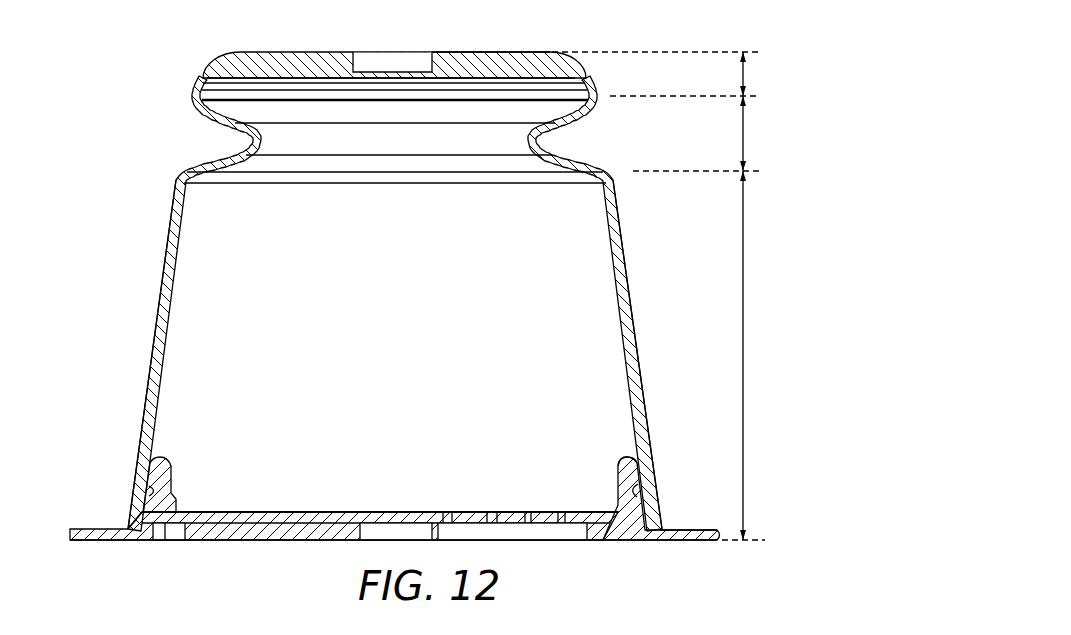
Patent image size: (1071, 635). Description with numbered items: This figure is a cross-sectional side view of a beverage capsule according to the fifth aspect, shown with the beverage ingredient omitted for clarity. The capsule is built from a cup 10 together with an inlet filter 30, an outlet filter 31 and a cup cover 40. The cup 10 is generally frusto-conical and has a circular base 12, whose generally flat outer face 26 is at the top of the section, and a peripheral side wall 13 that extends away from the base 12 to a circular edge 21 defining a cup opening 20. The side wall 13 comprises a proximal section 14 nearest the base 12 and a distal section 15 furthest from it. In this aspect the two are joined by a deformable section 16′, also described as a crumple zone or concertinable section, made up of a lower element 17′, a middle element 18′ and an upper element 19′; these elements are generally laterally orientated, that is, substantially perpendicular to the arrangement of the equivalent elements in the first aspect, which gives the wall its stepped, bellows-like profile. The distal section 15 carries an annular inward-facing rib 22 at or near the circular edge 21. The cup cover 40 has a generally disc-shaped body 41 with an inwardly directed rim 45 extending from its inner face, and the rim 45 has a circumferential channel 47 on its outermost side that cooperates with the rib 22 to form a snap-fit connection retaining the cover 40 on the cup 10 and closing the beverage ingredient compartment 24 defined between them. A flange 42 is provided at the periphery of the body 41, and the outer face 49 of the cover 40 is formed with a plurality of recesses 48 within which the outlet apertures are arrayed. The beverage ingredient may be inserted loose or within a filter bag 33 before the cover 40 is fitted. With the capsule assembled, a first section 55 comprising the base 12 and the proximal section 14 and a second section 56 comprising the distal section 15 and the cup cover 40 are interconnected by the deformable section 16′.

The cup 10 is at (133, 269).
The base 12 is at (525, 52).
The peripheral side wall 13 is at (138, 219).
The proximal section 14 is at (229, 60).
The distal section 15 is at (152, 347).
The deformable section 16′ is at (706, 133).
The lower element 17′ is at (200, 80).
The middle element 18′ is at (210, 112).
The upper element 19′ is at (223, 160).
The cup opening 20 is at (320, 485).
The circular edge 21 is at (136, 512).
The annular inward-facing rib 22 is at (158, 491).
The beverage ingredient compartment 24 is at (595, 312).
The outer face 26 is at (473, 48).
The inlet filter 30 is at (310, 80).
The outlet filter 31 is at (222, 512).
The filter bag 33 is at (365, 48).
The cup cover 40 is at (618, 533).
The body 41 is at (548, 530).
The flange 42 is at (687, 540).
The rim 45 is at (626, 471).
The circumferential channel 47 is at (632, 490).
The recesses 48 is at (503, 545).
The outer face 49 is at (237, 543).
The first section 55 is at (664, 74).
The second section 56 is at (749, 355).